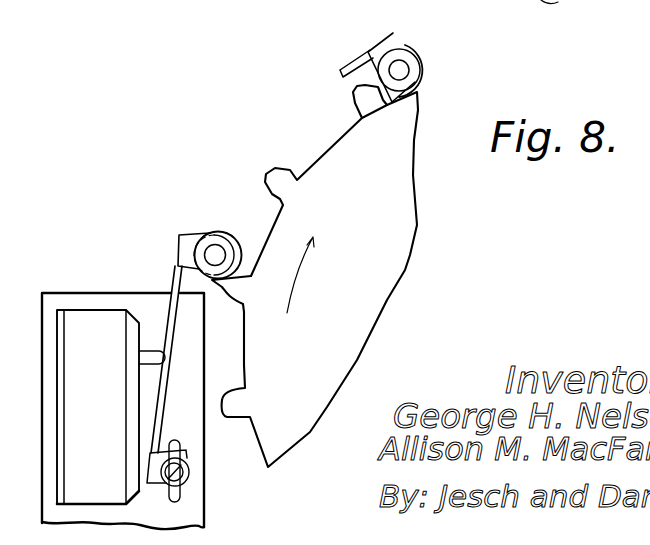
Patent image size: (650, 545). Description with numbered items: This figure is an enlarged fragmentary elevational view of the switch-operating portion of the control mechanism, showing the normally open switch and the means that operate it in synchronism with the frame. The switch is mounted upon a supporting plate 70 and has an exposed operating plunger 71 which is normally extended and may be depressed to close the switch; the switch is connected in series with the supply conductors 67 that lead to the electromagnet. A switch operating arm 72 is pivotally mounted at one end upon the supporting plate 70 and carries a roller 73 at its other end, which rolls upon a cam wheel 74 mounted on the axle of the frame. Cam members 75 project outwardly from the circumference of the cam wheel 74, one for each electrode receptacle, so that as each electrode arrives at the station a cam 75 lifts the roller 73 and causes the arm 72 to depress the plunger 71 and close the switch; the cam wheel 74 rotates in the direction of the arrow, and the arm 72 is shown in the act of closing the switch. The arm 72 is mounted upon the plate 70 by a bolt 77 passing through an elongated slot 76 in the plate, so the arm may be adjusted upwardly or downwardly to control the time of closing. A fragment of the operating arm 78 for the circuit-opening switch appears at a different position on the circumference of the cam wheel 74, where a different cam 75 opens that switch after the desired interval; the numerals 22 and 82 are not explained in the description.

The follower pin 22 is at (210, 233).
The supply conductors 67 is at (91, 309).
The supporting plate 70 is at (122, 293).
The operating plunger 71 is at (162, 358).
The switch operating arm 72 is at (177, 264).
The roller 73 is at (223, 232).
The cam wheel 74 is at (328, 151).
The cam members 75 is at (353, 92).
The elongated slot 76 is at (177, 440).
The bolt 77 is at (189, 473).
The operating arm 78 is at (357, 52).
The link 82 is at (489, 0).